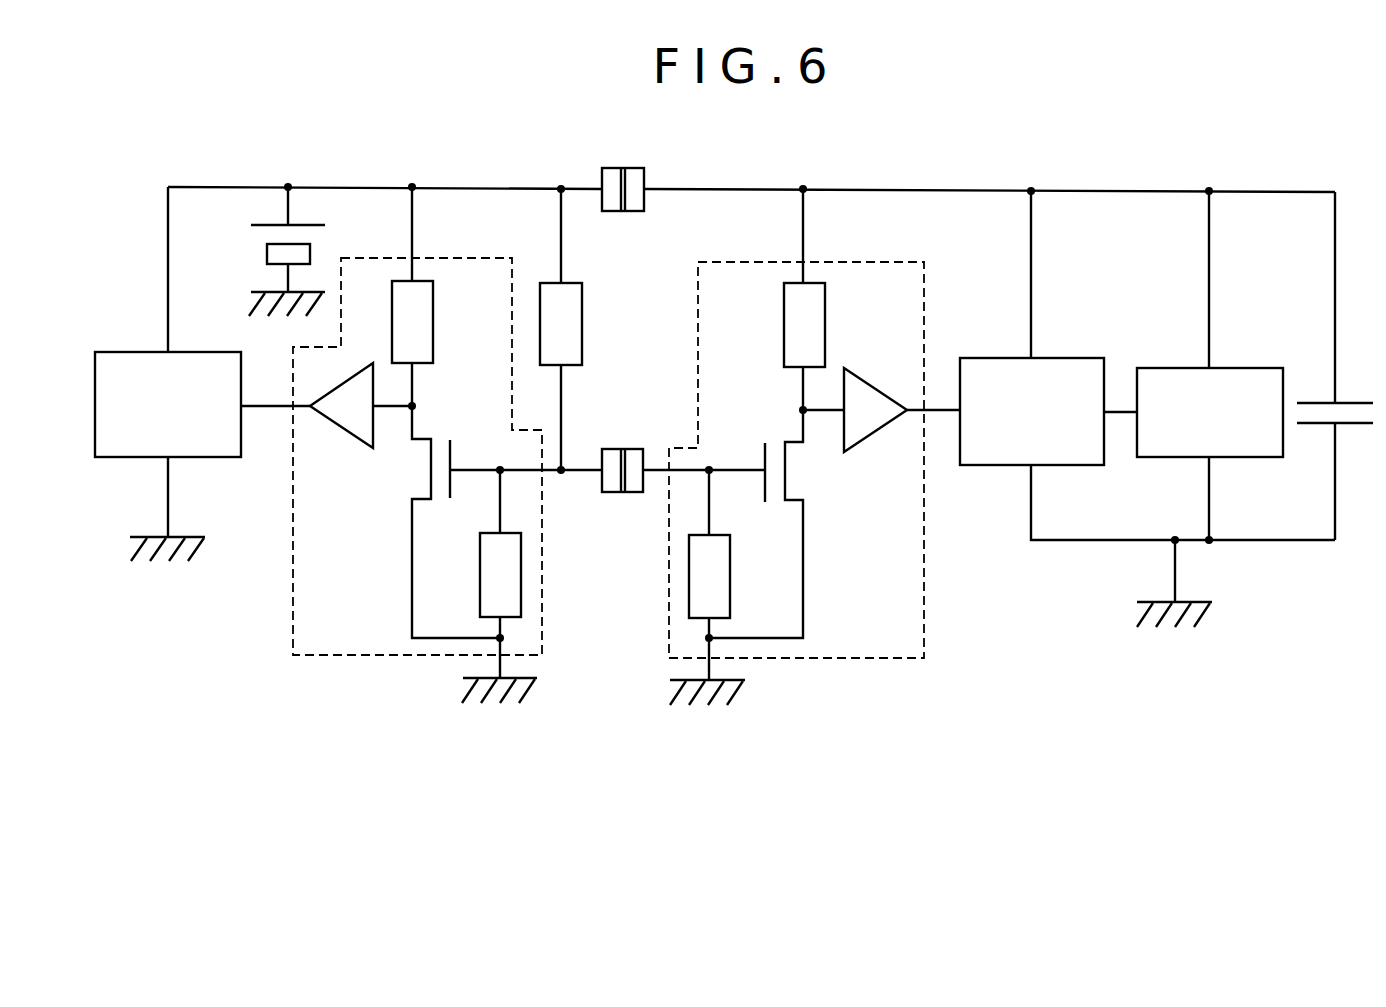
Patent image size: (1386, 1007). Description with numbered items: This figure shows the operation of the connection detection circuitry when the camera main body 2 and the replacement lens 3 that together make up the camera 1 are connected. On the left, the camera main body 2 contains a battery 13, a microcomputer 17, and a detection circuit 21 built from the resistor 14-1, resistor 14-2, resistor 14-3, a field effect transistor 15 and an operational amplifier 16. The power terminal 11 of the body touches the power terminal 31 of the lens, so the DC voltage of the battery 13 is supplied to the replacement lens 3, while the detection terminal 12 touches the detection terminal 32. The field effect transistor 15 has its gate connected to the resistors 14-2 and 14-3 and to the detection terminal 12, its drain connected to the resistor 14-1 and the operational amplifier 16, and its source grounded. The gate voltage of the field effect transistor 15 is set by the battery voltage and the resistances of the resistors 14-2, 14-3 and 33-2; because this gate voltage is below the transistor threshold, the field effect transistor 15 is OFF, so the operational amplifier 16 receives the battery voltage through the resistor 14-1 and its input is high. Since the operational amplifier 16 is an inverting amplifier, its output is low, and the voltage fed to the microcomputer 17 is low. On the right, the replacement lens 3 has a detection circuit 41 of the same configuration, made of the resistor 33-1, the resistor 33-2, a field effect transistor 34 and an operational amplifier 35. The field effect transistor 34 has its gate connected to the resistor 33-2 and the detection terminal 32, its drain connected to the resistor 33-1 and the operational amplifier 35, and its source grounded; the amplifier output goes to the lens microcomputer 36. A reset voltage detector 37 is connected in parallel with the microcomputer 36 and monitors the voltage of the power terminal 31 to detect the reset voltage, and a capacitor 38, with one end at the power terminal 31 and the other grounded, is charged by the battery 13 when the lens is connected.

The camera 1 is at (590, 762).
The camera main body 2 is at (305, 692).
The replacement lens 3 is at (818, 697).
The power terminal 11 is at (612, 168).
The power terminal 31 is at (634, 168).
The detection terminal 12 is at (612, 449).
The detection terminal 32 is at (634, 449).
The battery 13 is at (305, 224).
The resistor 14-1 is at (433, 303).
The resistor 14-2 is at (582, 324).
The resistor 14-3 is at (521, 573).
The field effect transistor 15 is at (430, 492).
The operational amplifier 16 is at (352, 380).
The microcomputer 17 is at (185, 351).
The detection circuit 21 is at (462, 258).
The resistor 33-1 is at (784, 308).
The resistor 33-2 is at (730, 565).
The field effect transistor 34 is at (805, 498).
The operational amplifier 35 is at (872, 382).
The microcomputer 36 is at (1075, 358).
The reset voltage detector 37 is at (1238, 368).
The capacitor 38 is at (1350, 403).
The detection circuit 41 is at (835, 262).